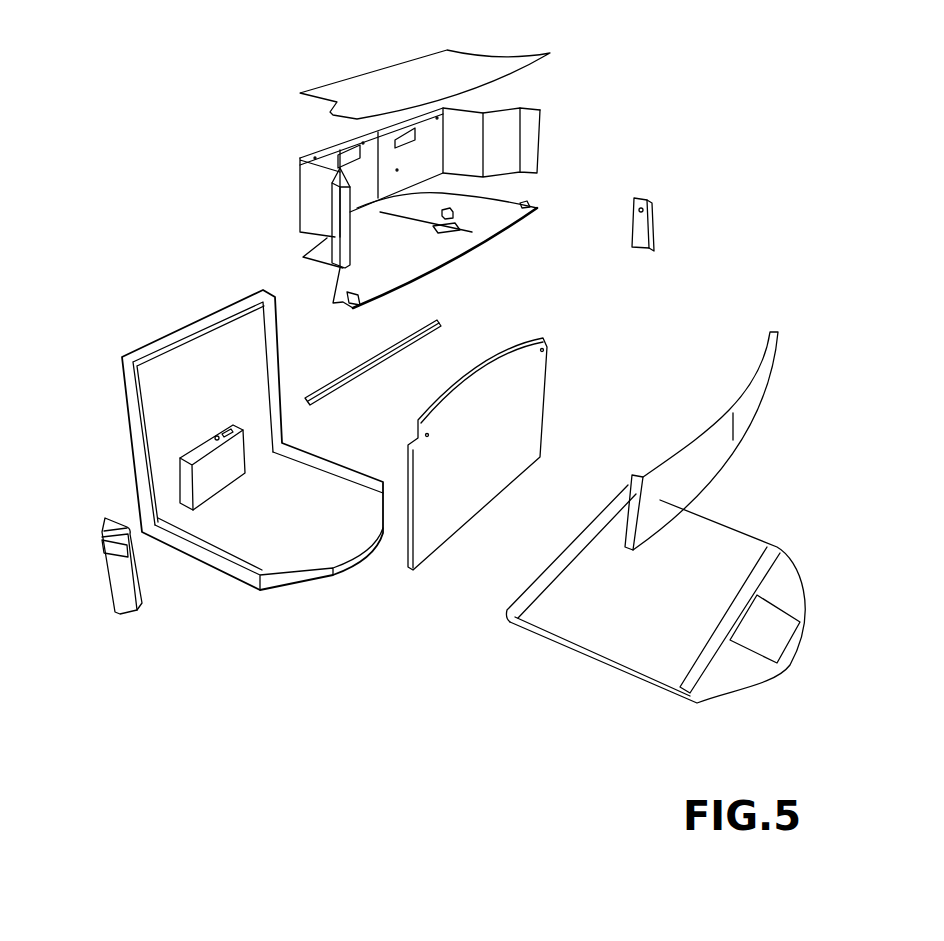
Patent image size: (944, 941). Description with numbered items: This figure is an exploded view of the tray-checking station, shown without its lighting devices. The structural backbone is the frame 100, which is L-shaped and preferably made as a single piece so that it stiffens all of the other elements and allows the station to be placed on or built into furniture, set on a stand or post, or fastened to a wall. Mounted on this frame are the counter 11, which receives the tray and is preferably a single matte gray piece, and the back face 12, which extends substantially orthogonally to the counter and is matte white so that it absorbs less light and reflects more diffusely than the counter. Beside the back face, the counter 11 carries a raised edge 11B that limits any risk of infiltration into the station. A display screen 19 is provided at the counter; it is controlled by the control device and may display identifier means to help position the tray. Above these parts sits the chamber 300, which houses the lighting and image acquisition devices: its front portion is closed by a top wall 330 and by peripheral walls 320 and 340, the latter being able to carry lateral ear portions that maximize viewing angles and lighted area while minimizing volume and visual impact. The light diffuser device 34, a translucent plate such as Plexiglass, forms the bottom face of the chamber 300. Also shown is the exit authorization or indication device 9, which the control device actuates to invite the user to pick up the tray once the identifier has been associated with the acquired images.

The chamber 300 is at (213, 93).
The top wall 330 is at (480, 72).
The peripheral wall 320 is at (498, 125).
The light diffuser device 34 is at (425, 238).
The exit authorization or indication device 9 is at (105, 550).
The frame 100 is at (90, 333).
The back face 12 is at (523, 390).
The peripheral wall 340 is at (760, 398).
The counter 11 is at (627, 640).
The raised edge 11B is at (505, 612).
The display screen 19 is at (773, 628).